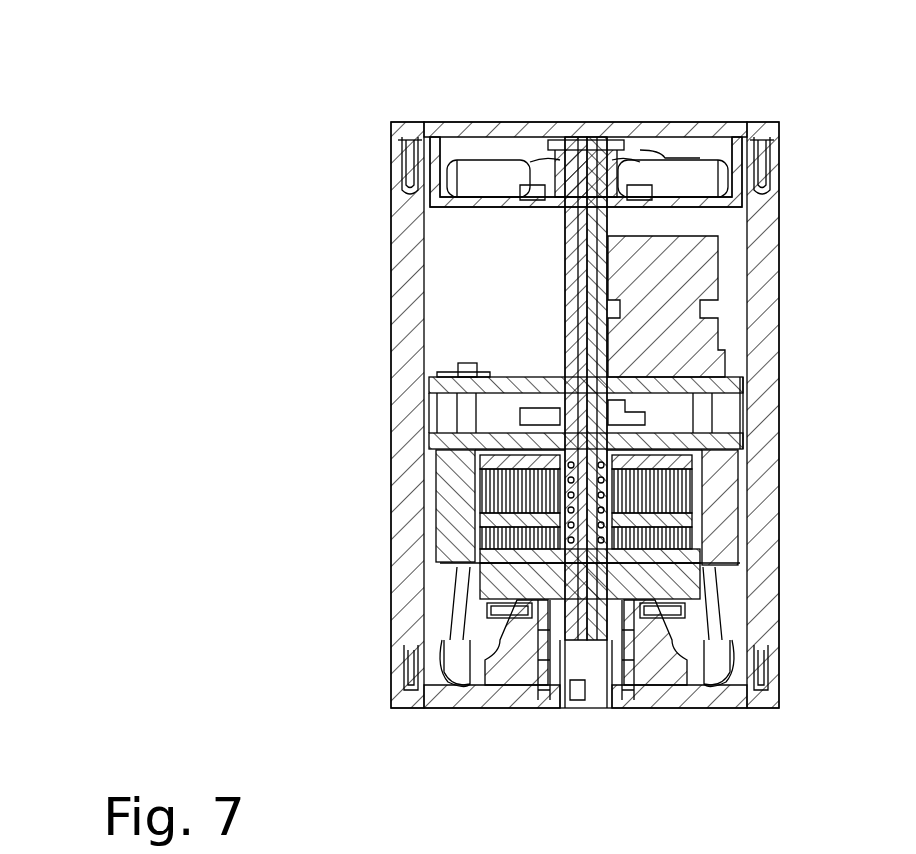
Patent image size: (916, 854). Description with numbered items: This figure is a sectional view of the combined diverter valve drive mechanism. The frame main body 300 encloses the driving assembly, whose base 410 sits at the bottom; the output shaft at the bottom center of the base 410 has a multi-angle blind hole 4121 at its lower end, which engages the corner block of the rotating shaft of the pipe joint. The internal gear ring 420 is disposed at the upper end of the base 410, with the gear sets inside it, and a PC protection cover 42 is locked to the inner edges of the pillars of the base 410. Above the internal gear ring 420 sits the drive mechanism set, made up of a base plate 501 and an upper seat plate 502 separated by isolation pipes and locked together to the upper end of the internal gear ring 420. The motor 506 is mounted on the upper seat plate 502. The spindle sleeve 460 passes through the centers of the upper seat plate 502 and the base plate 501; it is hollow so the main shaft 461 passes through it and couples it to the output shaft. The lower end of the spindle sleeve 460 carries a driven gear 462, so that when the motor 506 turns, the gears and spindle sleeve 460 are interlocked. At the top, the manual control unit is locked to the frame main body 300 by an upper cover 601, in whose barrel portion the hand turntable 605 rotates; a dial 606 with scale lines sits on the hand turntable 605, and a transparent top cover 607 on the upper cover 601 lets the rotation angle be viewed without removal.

The frame main body 300 is at (765, 340).
The upper cover 601 is at (775, 146).
The hand turntable 605 is at (450, 170).
The dial 606 is at (582, 137).
The transparent top cover 607 is at (716, 126).
The spindle sleeve 460 is at (568, 243).
The main shaft 461 is at (585, 292).
The motor 506 is at (708, 270).
The upper seat plate 502 is at (738, 382).
The base plate 501 is at (738, 440).
The driven gear 462 is at (520, 412).
The internal gear ring 420 is at (455, 490).
The PC protection cover 42 is at (500, 593).
The base 410 is at (470, 610).
The multi-angle blind hole 4121 is at (580, 693).